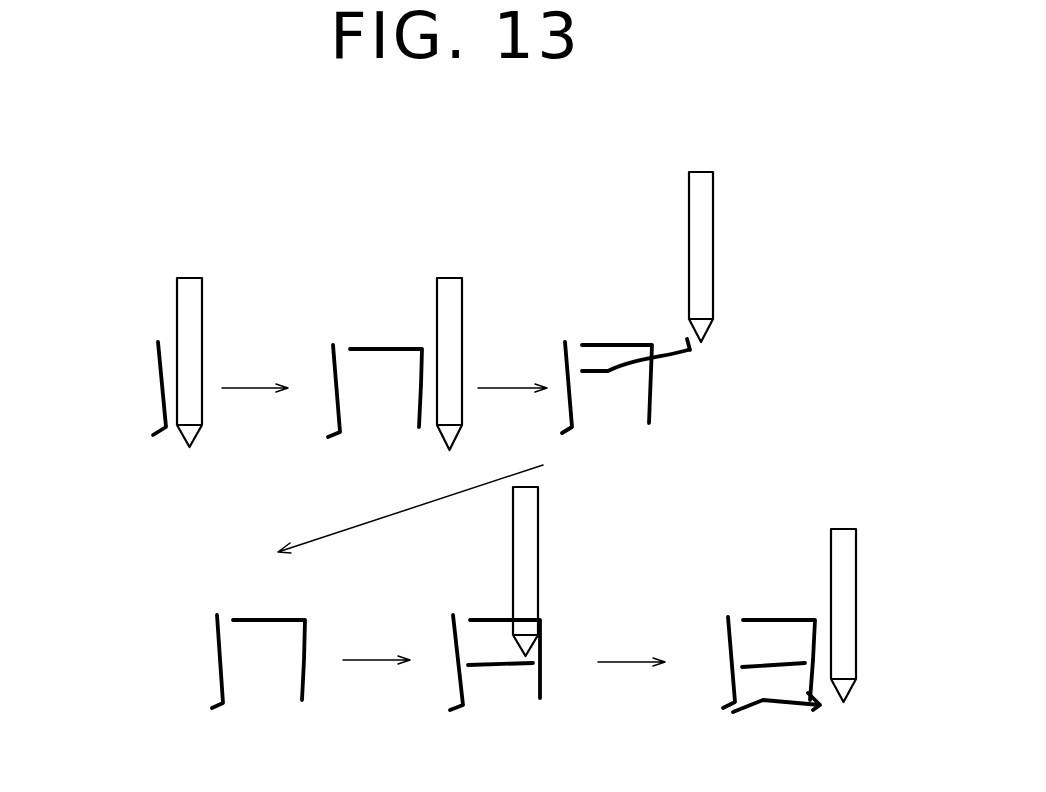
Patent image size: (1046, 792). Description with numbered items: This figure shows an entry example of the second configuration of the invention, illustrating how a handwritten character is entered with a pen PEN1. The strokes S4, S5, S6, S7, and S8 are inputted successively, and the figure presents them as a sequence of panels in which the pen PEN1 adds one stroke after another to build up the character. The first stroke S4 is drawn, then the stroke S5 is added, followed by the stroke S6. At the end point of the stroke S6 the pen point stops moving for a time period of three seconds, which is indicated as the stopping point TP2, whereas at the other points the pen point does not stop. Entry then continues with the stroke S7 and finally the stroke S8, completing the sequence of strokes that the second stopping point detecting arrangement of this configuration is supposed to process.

The pen PEN1 is at (195, 277).
The stroke S4 is at (163, 397).
The stroke S5 is at (385, 348).
The stroke S6 is at (665, 355).
The stopping point TP2 is at (692, 348).
The stroke S7 is at (502, 667).
The stroke S8 is at (768, 702).